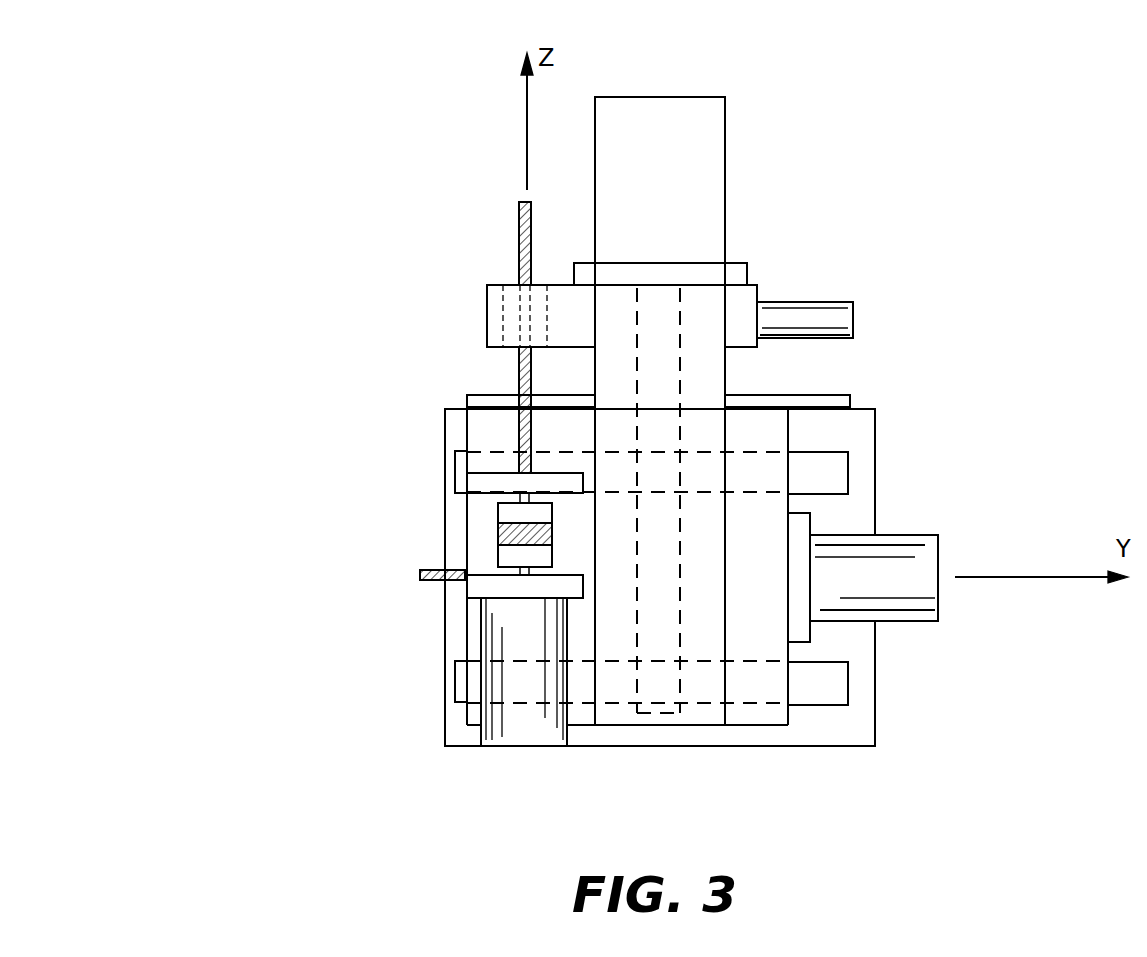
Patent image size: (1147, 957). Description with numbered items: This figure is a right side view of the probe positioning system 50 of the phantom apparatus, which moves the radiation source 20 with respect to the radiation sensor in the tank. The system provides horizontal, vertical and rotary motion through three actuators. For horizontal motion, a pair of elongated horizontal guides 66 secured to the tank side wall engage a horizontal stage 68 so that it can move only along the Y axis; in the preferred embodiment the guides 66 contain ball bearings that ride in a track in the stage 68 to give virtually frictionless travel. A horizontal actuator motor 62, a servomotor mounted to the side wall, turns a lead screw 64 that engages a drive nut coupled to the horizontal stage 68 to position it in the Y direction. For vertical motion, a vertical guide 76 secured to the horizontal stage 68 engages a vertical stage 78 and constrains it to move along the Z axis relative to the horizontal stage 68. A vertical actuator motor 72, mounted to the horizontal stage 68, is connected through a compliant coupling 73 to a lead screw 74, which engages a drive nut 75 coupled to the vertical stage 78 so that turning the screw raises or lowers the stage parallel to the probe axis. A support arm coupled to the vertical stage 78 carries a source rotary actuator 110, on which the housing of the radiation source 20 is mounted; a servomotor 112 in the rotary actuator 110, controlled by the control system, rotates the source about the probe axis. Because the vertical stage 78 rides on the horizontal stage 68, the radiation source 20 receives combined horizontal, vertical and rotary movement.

The radiation source 20 is at (765, 117).
The probe positioning system 50 is at (332, 557).
The horizontal actuator motor 62 is at (862, 578).
The lead screw 64 is at (420, 578).
The elongated horizontal guides 66 is at (462, 478).
The horizontal stage 68 is at (760, 713).
The vertical actuator motor 72 is at (500, 703).
The compliant coupling 73 is at (513, 533).
The lead screw 74 is at (523, 390).
The drive nut 75 is at (517, 283).
The vertical guide 76 is at (653, 410).
The vertical stage 78 is at (695, 713).
The rotary actuator 110 is at (738, 305).
The servomotor 112 is at (805, 317).